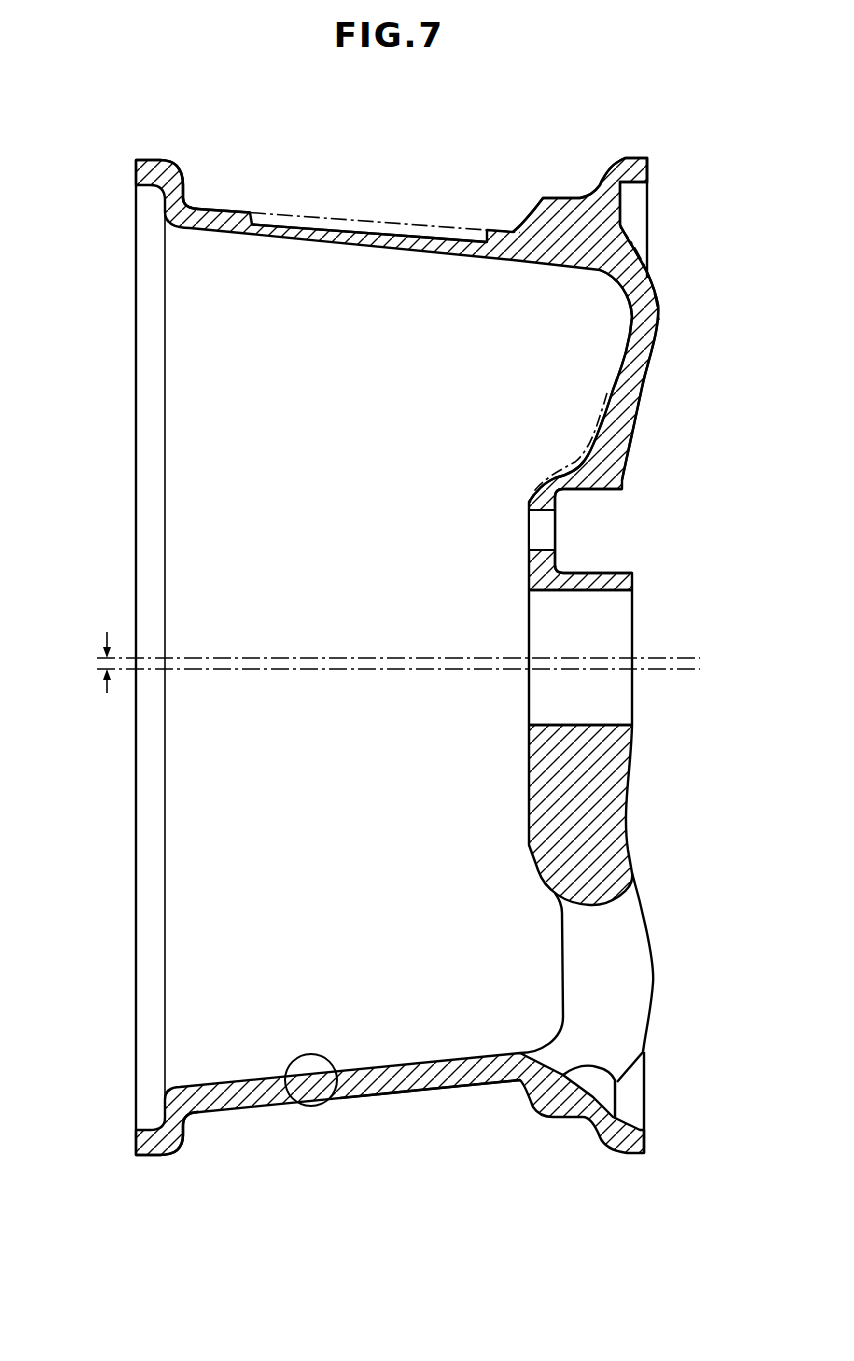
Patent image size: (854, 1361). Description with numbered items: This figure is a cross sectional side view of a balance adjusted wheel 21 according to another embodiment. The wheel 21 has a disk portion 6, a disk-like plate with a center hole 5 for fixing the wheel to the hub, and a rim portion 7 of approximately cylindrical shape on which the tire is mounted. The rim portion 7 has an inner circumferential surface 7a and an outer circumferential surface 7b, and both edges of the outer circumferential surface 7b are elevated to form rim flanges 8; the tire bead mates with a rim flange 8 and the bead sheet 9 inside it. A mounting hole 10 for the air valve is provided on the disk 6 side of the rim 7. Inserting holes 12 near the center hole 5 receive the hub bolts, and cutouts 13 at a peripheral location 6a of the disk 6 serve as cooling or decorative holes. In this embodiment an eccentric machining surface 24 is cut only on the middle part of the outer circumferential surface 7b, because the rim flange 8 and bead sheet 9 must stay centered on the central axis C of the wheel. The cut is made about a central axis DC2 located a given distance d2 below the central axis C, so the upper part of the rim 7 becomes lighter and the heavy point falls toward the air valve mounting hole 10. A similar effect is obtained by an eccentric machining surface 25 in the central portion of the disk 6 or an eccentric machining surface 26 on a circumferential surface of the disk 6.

The wheel 21 is at (695, 209).
The rim flange 8 is at (155, 165).
The bead sheet 9 is at (232, 200).
The eccentric machining surface 24 is at (365, 228).
The eccentric machining surface 26 is at (640, 248).
The peripheral location of the disk 6a is at (650, 335).
The eccentric machining surface 25 is at (558, 475).
The inserting hole 12 is at (608, 527).
The center hole 5 is at (612, 627).
The disk portion 6 is at (614, 805).
The cutout 13 is at (640, 1005).
The rim portion 7 is at (260, 1116).
The inner circumferential surface 7a is at (292, 1097).
The outer circumferential surface 7b is at (358, 1095).
The mounting hole for the air valve 10 is at (617, 1083).
The central axis C is at (340, 658).
The central axis DC2 is at (338, 669).
The given distance d2 is at (86, 662).